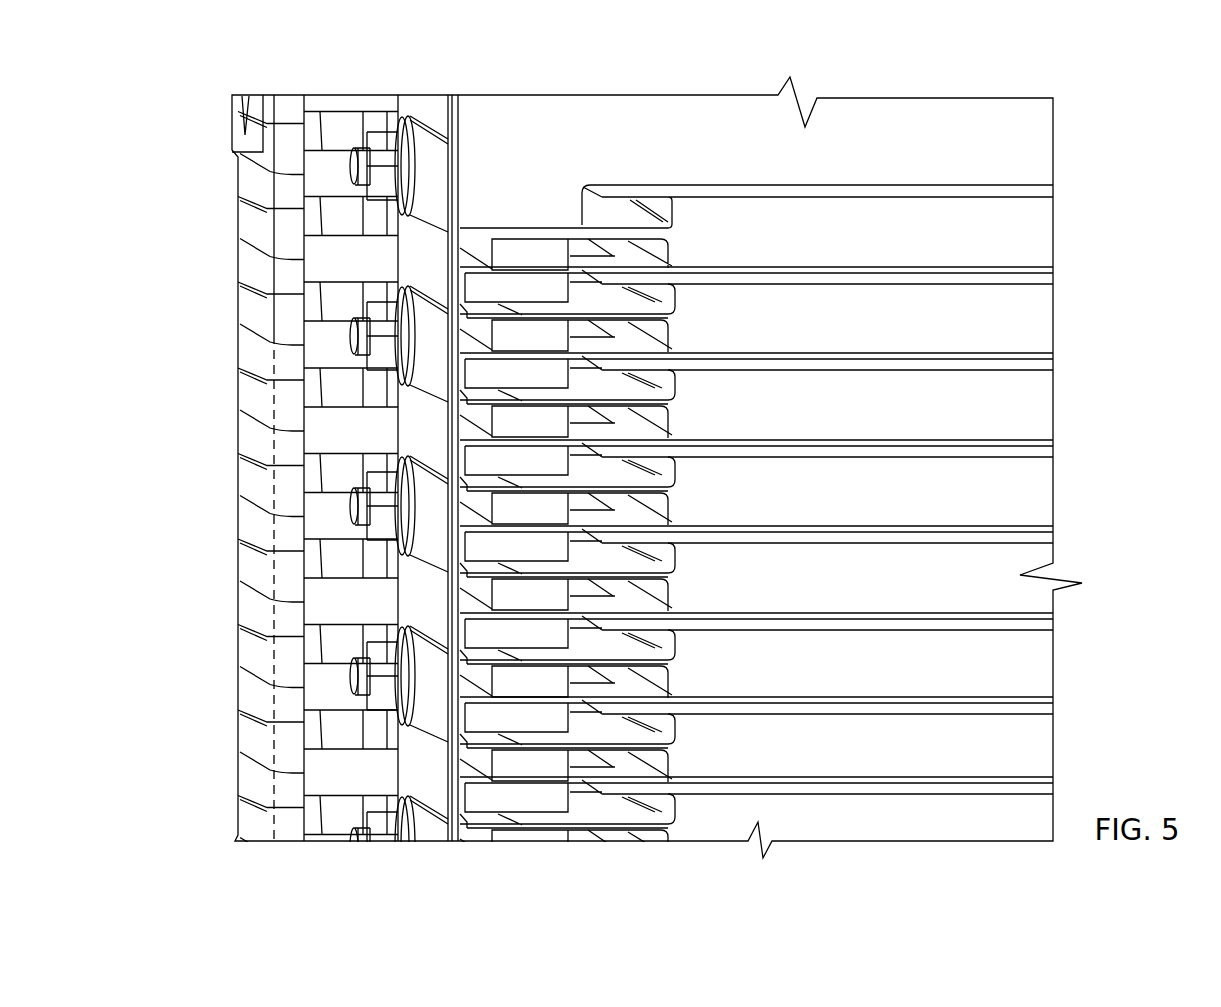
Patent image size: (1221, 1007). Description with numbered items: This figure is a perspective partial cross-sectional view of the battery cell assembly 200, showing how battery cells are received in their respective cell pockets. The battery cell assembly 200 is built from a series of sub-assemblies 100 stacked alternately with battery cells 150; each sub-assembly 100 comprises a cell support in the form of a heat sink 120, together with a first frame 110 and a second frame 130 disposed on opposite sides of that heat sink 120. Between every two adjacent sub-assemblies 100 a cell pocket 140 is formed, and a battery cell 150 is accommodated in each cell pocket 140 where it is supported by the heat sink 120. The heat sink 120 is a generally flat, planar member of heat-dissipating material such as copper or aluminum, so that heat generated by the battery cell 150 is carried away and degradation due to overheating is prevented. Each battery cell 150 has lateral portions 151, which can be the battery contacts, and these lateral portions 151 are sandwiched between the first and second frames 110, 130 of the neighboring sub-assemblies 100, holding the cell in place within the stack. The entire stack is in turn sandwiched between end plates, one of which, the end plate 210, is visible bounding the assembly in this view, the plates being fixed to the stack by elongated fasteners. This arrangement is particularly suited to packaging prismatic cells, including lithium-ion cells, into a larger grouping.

The sub-assembly 100 is at (232, 540).
The first frame 110 is at (241, 382).
The heat sink 120 is at (622, 243).
The second frame 130 is at (242, 415).
The cell pocket 140 is at (1056, 198).
The battery cell 150 is at (1030, 397).
The lateral portion 151 is at (602, 302).
The battery cell assembly 200 is at (1135, 146).
The end plate 210 is at (888, 122).